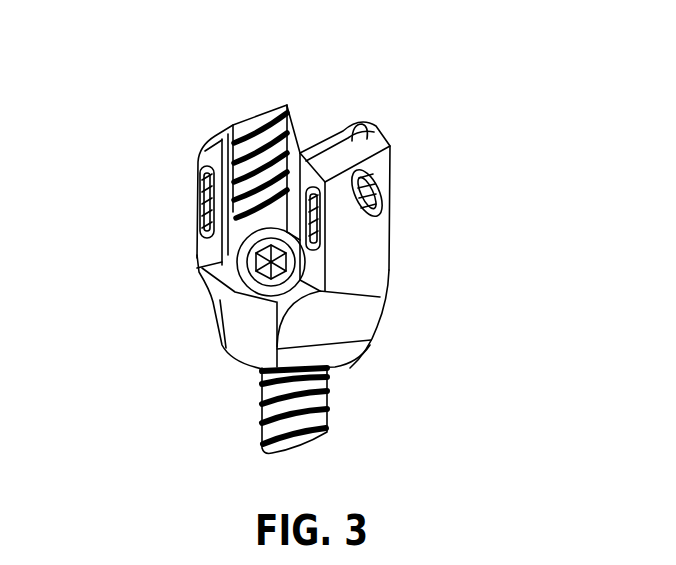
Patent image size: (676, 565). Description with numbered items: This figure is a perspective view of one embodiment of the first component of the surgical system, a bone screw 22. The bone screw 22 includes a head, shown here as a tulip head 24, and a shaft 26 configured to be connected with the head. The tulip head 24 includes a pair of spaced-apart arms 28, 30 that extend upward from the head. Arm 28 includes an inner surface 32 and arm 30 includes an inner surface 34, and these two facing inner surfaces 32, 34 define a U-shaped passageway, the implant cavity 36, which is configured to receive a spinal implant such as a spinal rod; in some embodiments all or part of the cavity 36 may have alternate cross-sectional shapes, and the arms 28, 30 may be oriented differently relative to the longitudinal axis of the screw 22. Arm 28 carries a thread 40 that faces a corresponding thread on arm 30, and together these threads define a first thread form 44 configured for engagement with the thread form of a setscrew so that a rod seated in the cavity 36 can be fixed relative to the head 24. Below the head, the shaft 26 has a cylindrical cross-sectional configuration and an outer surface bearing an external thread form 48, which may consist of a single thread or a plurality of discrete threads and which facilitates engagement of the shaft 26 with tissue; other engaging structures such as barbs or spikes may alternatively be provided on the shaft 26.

The bone screw 22 is at (145, 359).
The tulip head 24 is at (425, 220).
The shaft 26 is at (234, 451).
The arm 28 is at (200, 163).
The arm 30 is at (389, 134).
The inner surface 32 is at (246, 233).
The inner surface 34 is at (345, 125).
The implant cavity 36 is at (308, 118).
The thread 40 is at (287, 106).
The first thread form 44 is at (228, 112).
The external thread form 48 is at (330, 412).